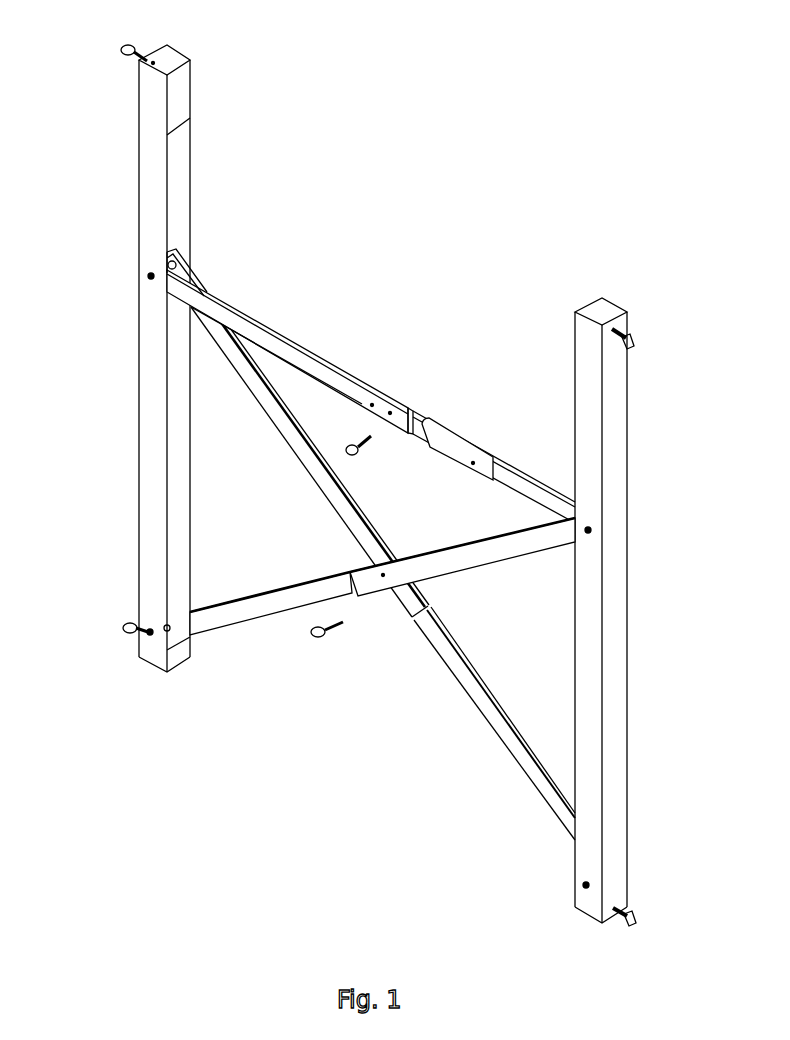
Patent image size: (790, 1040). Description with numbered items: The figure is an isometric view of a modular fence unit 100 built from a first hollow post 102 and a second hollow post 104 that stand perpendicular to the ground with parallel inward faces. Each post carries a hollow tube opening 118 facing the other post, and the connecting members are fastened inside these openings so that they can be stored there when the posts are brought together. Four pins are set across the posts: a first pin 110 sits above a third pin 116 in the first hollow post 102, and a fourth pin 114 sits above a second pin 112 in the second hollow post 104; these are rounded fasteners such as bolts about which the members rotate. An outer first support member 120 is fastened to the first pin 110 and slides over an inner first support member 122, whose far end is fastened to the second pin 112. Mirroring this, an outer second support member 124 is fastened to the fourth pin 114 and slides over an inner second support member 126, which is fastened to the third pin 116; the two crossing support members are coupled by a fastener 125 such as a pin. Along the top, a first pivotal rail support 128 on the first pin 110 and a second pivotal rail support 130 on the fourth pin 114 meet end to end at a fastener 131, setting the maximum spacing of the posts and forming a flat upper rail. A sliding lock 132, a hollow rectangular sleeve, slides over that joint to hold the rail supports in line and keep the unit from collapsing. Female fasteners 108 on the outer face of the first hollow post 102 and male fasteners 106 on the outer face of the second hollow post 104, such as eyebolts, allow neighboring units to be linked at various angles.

The modular fence unit 100 is at (383, 490).
The first hollow post 102 is at (153, 160).
The second hollow post 104 is at (622, 418).
The set of male fasteners 106 is at (632, 335).
The set of female fasteners 108 is at (121, 48).
The first pin 110 is at (151, 276).
The second pin 112 is at (585, 885).
The fourth pin 114 is at (588, 530).
The third pin 116 is at (148, 634).
The hollow tube opening 118 is at (181, 203).
The outer first support member 120 is at (310, 460).
The inner first support member 122 is at (500, 735).
The outer second support member 124 is at (462, 560).
The fastener 125 is at (284, 675).
The inner second support member 126 is at (297, 598).
The first pivotal rail support 128 is at (252, 335).
The second pivotal rail support 130 is at (543, 494).
The fastener 131 is at (358, 434).
The sliding lock 132 is at (455, 448).